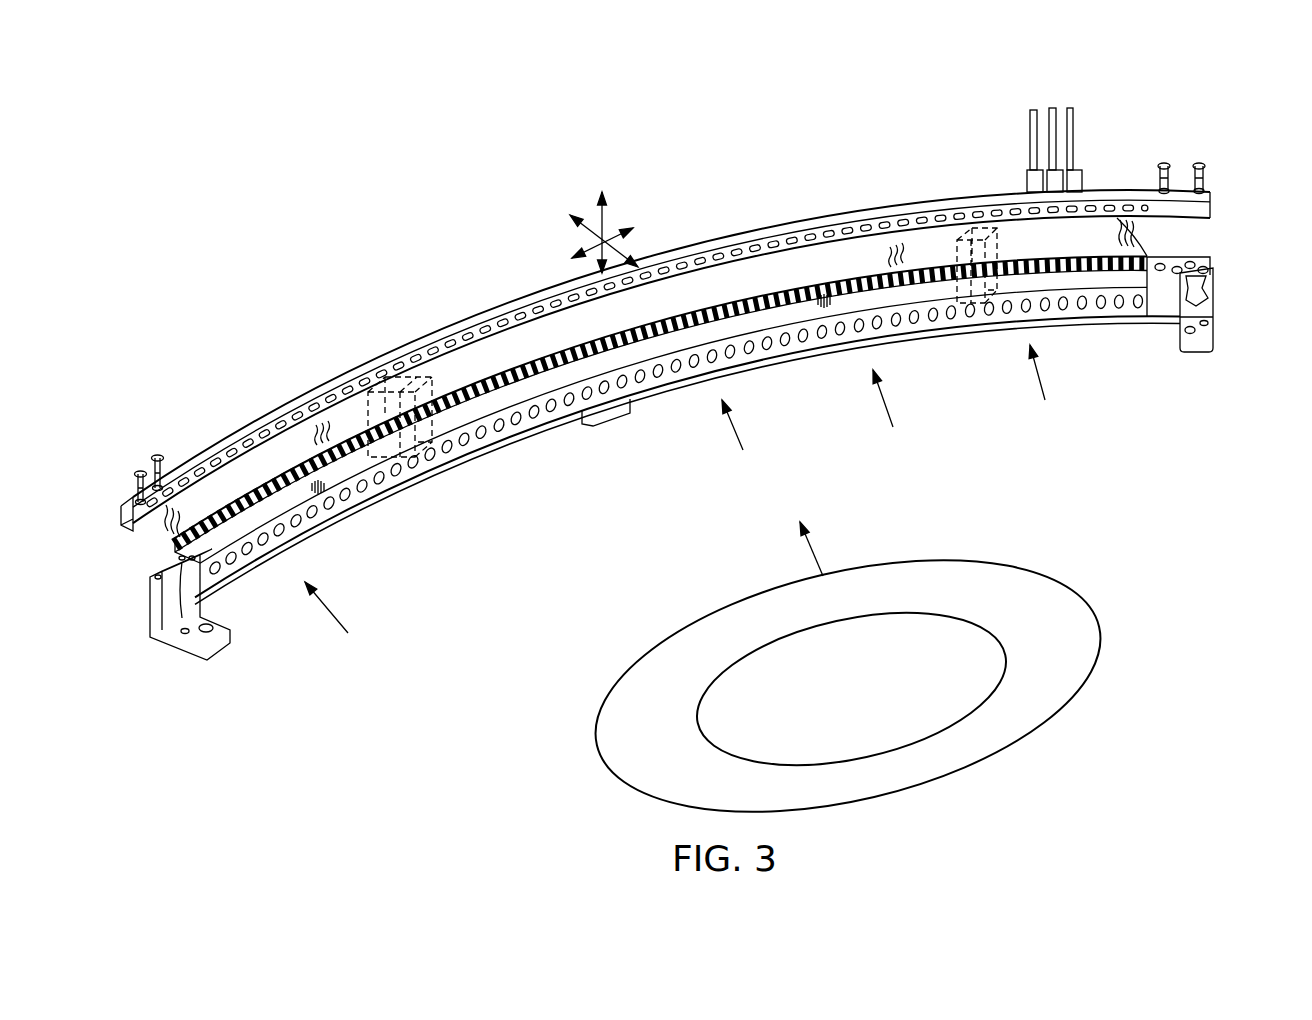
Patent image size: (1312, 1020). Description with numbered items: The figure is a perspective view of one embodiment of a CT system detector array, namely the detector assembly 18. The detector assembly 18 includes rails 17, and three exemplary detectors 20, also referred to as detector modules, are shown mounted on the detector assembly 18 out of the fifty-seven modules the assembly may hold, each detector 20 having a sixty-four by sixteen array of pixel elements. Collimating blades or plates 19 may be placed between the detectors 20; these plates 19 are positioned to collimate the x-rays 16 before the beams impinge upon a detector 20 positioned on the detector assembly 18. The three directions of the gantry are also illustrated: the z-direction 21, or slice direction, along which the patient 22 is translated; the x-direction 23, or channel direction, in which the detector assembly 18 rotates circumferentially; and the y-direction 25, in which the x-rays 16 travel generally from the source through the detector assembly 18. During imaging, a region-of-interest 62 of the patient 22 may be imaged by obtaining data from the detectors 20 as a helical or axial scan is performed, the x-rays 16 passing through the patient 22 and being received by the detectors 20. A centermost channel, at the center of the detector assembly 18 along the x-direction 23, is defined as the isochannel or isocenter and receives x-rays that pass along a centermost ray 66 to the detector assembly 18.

The x-rays 16 is at (522, 472).
The rails 17 is at (1206, 290).
The detector assembly 18 is at (432, 320).
The collimating plates 19 is at (405, 487).
The detectors 20 is at (1029, 128).
The z-direction 21 is at (598, 212).
The patient 22 is at (1107, 621).
The x-direction 23 is at (610, 232).
The y-direction 25 is at (588, 236).
The region-of-interest 62 is at (987, 702).
The centermost ray 66 is at (810, 548).